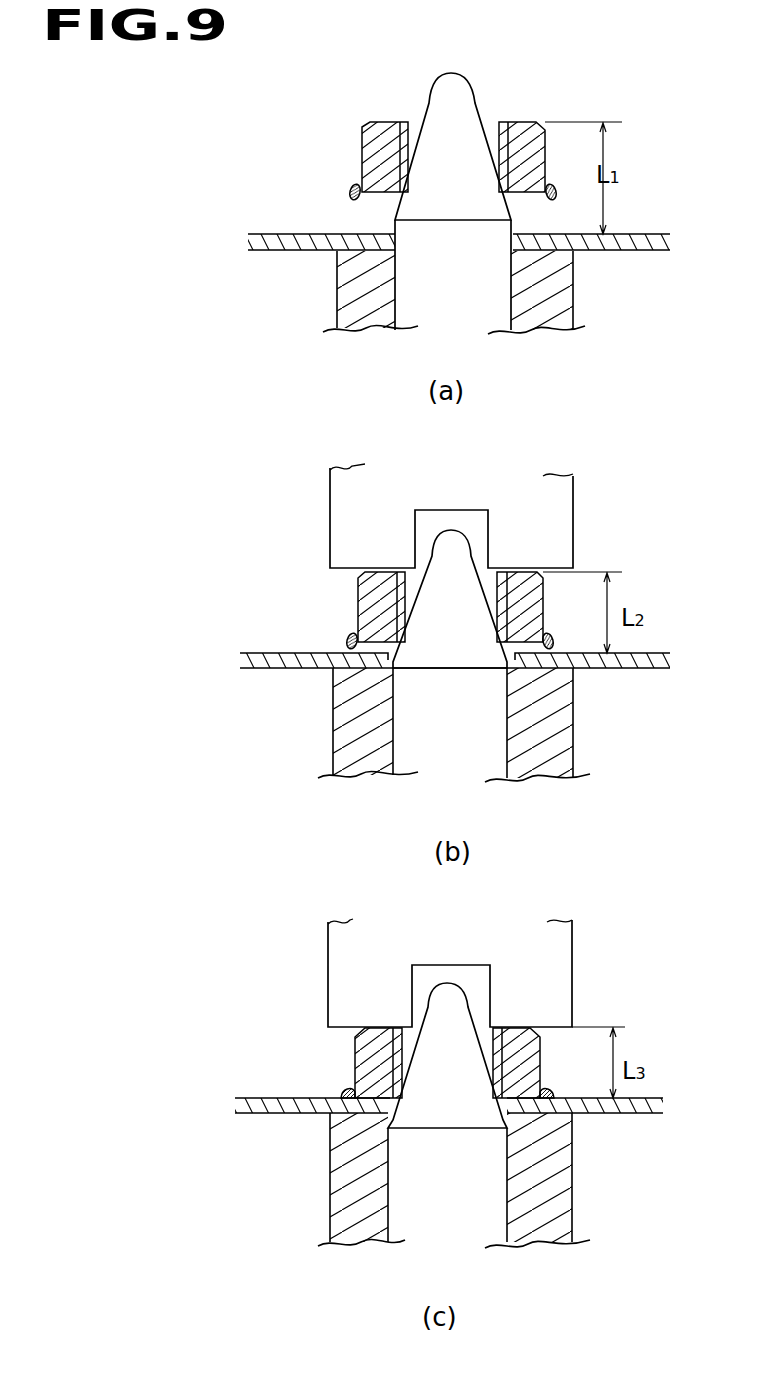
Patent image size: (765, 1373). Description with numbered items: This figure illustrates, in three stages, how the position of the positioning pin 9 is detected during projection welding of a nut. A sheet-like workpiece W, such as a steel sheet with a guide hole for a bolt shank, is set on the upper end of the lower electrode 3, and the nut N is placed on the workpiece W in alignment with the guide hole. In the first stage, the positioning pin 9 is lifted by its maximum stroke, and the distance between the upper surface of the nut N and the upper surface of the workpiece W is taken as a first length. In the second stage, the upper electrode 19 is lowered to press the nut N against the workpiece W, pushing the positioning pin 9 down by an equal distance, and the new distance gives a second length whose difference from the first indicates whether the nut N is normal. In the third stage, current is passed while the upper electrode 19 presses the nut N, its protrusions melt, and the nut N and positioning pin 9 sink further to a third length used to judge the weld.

The positioning pin 9 is at (440, 105).
The nut N is at (370, 150).
The sheet-like workpiece W is at (302, 232).
The lower electrode 3 is at (355, 283).
The upper electrode 19 is at (358, 492).